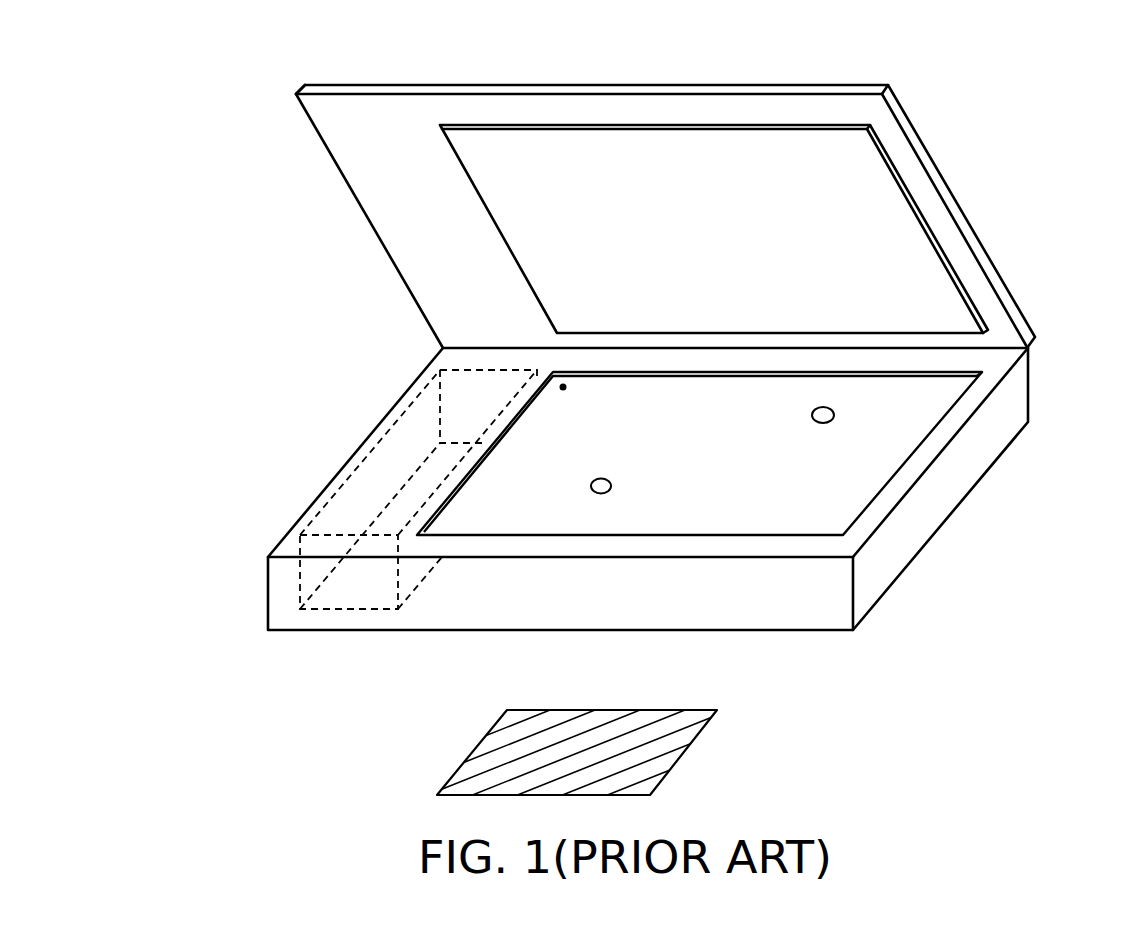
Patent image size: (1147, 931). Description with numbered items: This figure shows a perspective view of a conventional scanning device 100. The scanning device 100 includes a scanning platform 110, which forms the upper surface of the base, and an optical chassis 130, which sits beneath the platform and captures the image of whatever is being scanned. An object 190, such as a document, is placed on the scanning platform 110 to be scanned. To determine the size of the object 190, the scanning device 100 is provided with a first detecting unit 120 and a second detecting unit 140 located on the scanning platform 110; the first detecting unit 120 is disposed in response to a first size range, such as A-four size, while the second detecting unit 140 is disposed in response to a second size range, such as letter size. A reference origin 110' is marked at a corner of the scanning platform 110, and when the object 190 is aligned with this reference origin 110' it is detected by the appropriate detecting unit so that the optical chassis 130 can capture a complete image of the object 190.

The scanning device 100 is at (1139, 76).
The scanning platform 110 is at (773, 453).
The reference origin 110' is at (442, 347).
The first detecting unit 120 is at (833, 412).
The optical chassis 130 is at (383, 477).
The second detecting unit 140 is at (607, 490).
The object 190 is at (700, 729).